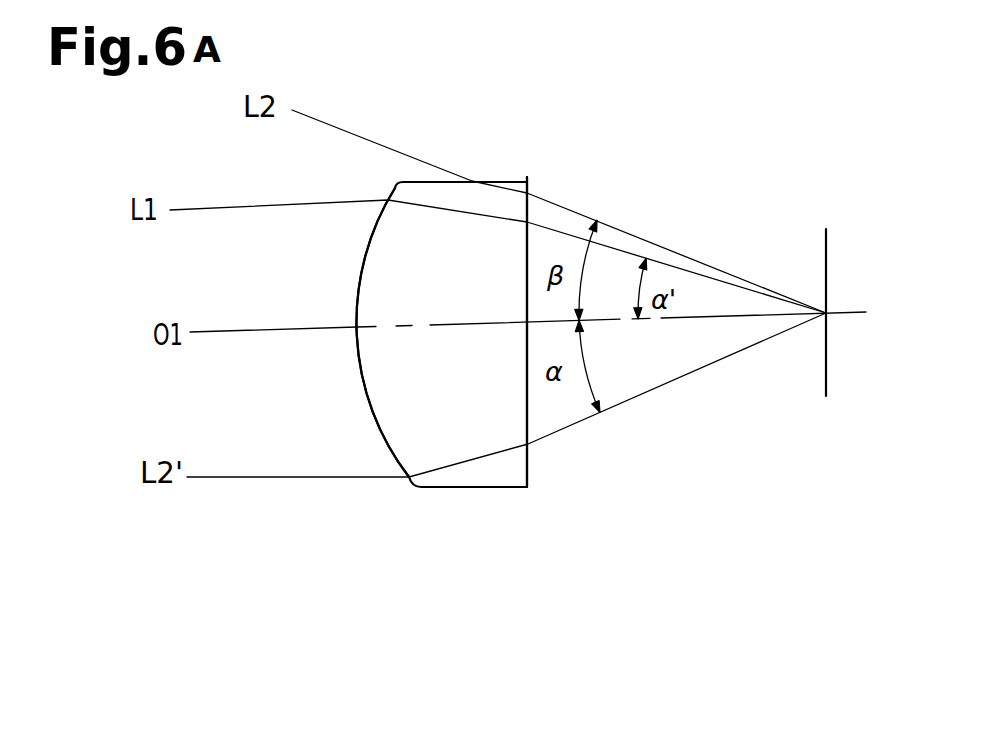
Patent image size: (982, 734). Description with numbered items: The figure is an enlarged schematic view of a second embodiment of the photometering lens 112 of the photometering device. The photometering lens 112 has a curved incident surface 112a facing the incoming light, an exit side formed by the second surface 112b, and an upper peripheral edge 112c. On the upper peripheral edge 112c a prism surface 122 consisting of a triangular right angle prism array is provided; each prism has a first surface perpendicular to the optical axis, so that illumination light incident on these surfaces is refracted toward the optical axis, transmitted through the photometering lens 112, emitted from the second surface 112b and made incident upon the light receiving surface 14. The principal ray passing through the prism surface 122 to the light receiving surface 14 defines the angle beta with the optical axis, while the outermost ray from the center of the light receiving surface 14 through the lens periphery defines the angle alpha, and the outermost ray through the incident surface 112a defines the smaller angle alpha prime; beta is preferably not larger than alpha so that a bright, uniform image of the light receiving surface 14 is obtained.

The photometering lens 112 is at (493, 473).
The incident surface 112a is at (366, 391).
The second surface 112b is at (530, 462).
The upper peripheral edge 112c is at (433, 180).
The prism surface 122 is at (483, 181).
The light receiving surface 14 is at (826, 272).